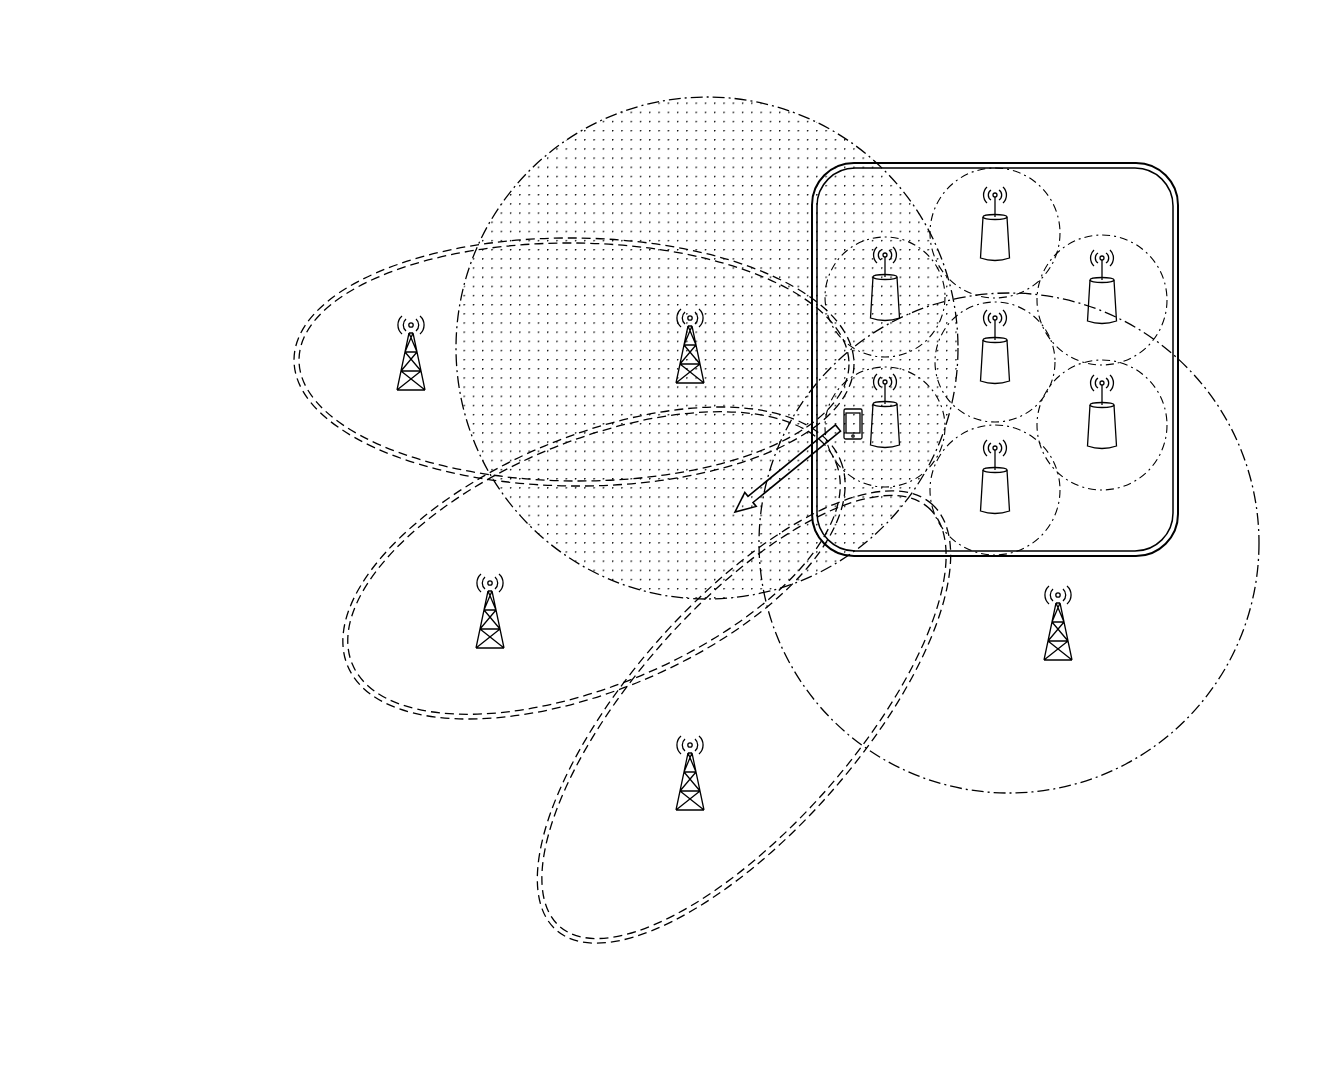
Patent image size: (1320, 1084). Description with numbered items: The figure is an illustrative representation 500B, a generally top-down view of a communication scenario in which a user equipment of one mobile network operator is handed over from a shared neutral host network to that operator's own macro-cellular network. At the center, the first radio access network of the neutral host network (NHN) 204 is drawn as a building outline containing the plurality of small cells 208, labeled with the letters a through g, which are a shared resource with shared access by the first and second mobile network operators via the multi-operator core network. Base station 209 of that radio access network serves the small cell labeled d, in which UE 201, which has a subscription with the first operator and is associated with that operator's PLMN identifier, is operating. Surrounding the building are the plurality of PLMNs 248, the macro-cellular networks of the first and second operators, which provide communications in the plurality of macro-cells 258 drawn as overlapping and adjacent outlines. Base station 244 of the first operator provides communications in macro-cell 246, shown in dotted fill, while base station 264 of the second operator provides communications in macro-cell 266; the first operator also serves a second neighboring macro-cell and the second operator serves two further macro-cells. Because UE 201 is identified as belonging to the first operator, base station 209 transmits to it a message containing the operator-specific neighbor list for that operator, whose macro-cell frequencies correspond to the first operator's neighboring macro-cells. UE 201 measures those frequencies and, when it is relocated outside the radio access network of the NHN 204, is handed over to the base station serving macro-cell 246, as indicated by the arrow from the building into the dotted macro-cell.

The illustrative representation 500B is at (265, 660).
The neutral host network (NHN) 204 is at (1238, 293).
The plurality of small cells 208 is at (1048, 326).
The macro-cell 246 is at (558, 149).
The plurality of macro-cells 258 is at (413, 180).
The base station 244 is at (668, 355).
The base station 264 is at (477, 635).
The macro-cell 266 is at (385, 558).
The plurality of PLMNs 248 is at (255, 562).
The UE 201 is at (853, 409).
The base station 209 is at (897, 444).